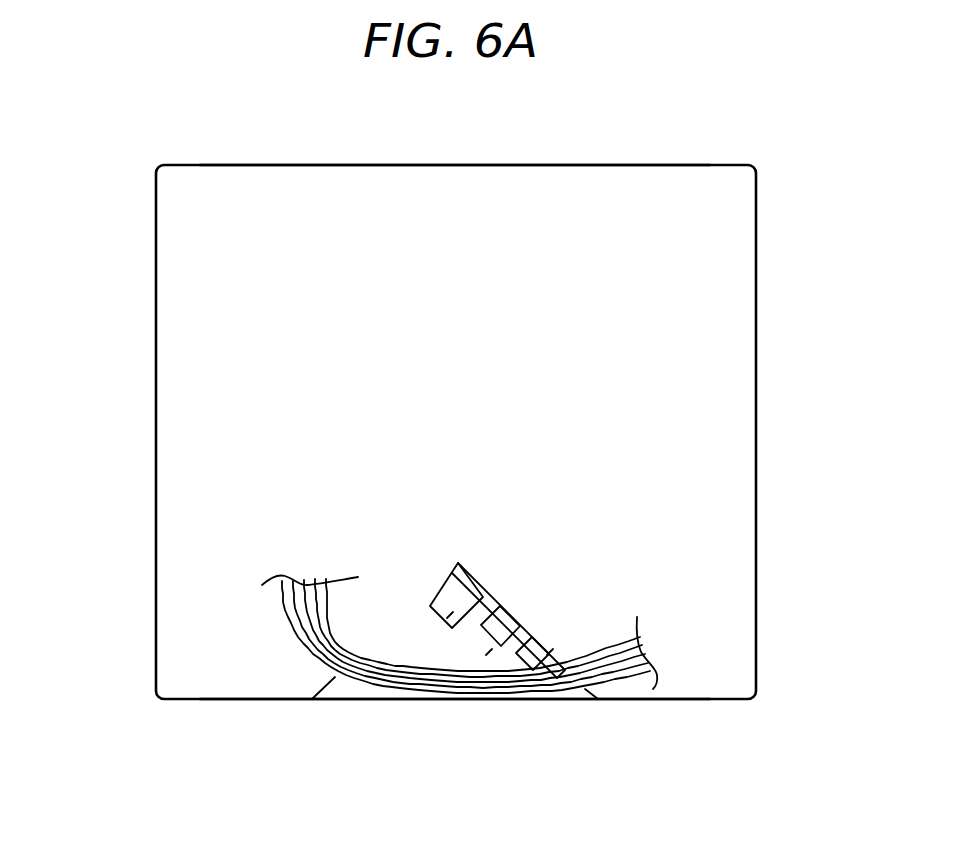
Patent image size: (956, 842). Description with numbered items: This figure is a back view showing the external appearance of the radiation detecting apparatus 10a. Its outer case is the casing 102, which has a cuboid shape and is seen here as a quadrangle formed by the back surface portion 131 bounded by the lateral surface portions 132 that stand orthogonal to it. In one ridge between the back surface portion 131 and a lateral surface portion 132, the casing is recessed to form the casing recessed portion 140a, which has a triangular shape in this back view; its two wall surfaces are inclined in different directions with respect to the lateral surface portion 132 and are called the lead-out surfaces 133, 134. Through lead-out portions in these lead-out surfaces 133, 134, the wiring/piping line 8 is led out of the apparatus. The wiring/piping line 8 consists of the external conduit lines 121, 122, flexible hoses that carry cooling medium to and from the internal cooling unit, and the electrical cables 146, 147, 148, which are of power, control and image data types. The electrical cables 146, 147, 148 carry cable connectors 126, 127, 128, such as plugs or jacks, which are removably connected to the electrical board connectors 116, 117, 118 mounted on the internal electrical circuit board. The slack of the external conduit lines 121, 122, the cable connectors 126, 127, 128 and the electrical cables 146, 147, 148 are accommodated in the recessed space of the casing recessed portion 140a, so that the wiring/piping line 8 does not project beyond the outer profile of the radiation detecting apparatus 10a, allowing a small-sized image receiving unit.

The radiation detecting apparatus 10a is at (702, 139).
The casing 102 is at (173, 398).
The back surface portion 131 is at (457, 197).
The lateral surface portion 132 is at (708, 699).
The lead-out surface 133 is at (333, 684).
The lead-out surface 134 is at (585, 690).
The wiring/piping line 8 is at (356, 575).
The external conduit line 121 is at (398, 645).
The external conduit line 122 is at (378, 655).
The electrical cable 146 is at (323, 598).
The electrical cable 147 is at (298, 620).
The electrical cable 148 is at (300, 643).
The electrical board connector 116 is at (550, 643).
The electrical board connector 117 is at (517, 603).
The electrical board connector 118 is at (473, 585).
The cable connector 126 is at (550, 652).
The cable connector 127 is at (490, 655).
The cable connector 128 is at (446, 650).
The casing recessed portion 140a is at (456, 648).